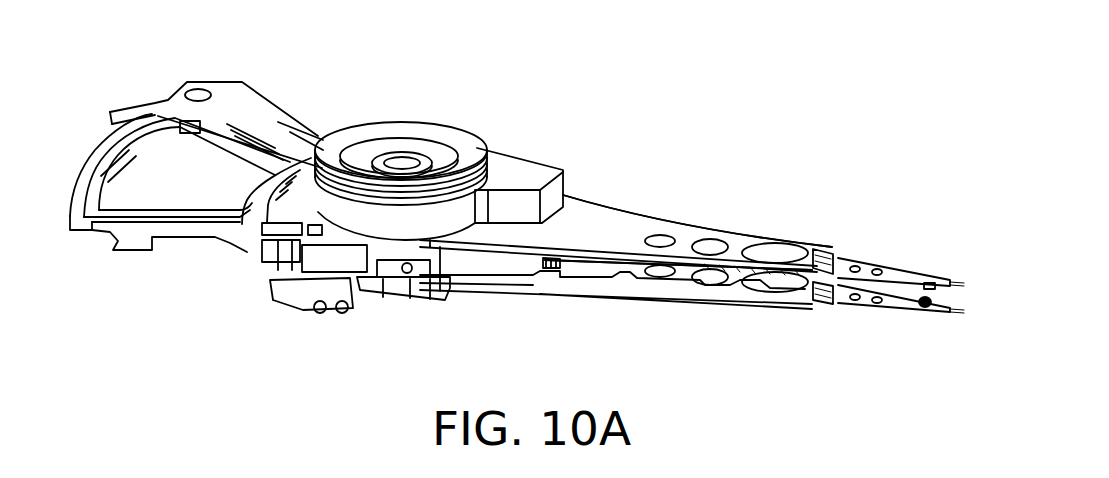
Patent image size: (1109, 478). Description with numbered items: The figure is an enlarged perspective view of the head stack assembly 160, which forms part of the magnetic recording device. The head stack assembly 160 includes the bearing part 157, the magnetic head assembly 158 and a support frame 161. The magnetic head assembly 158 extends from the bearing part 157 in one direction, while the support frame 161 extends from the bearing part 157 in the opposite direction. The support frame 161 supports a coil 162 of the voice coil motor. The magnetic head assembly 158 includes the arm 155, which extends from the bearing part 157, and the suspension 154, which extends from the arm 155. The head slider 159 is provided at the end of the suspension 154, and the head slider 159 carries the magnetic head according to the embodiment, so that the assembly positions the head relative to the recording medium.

The suspension 154 is at (896, 273).
The arm 155 is at (735, 244).
The bearing part 157 is at (420, 99).
The magnetic head assembly 158 is at (665, 197).
The head slider 159 is at (931, 285).
The head stack assembly 160 is at (622, 125).
The support frame 161 is at (235, 103).
The coil 162 is at (172, 205).